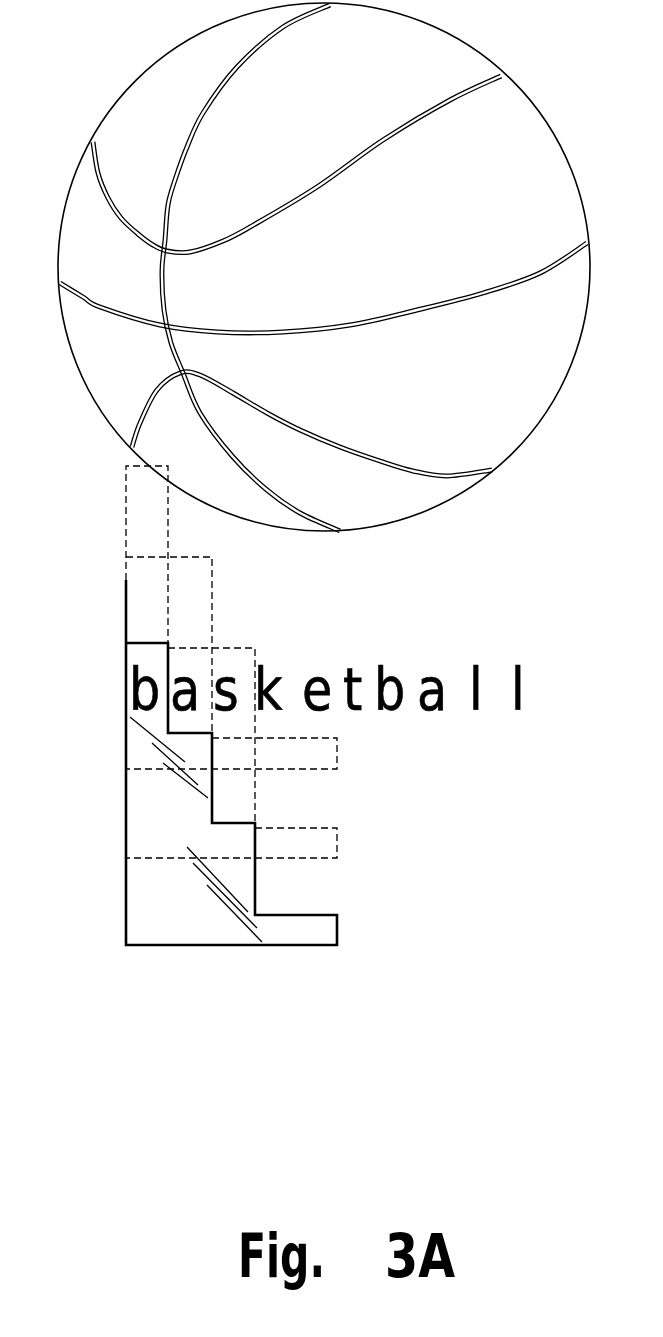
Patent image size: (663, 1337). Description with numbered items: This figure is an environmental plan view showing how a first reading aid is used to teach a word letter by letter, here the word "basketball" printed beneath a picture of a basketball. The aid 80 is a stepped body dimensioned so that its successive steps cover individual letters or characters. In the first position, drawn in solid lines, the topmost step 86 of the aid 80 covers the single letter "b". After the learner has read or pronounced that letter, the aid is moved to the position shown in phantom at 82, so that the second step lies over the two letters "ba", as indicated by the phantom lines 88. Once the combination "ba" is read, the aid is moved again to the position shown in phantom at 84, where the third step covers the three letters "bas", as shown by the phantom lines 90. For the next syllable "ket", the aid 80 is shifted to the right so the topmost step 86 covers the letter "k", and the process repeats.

The aid 80 is at (140, 912).
The phantom position of aid 82 is at (337, 845).
The phantom position of aid 84 is at (337, 757).
The topmost step 86 is at (155, 714).
The phantom lines 88 is at (212, 578).
The phantom lines 90 is at (257, 753).